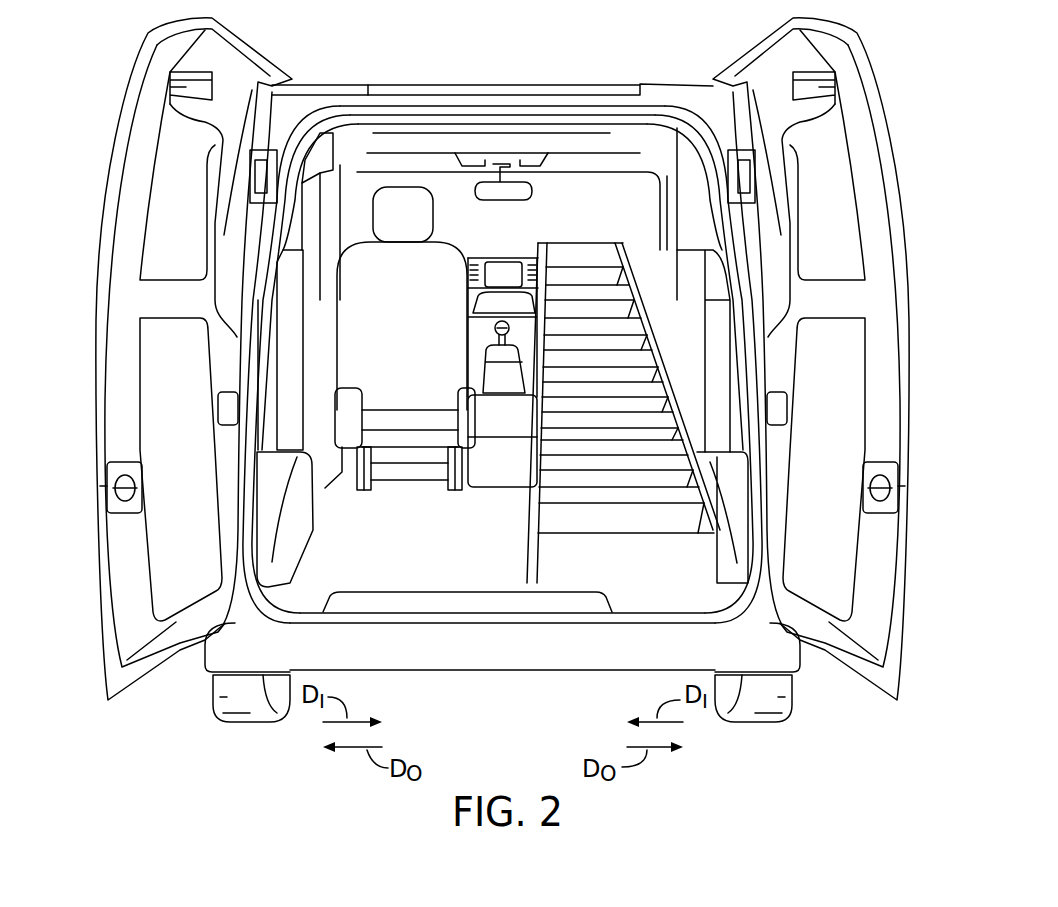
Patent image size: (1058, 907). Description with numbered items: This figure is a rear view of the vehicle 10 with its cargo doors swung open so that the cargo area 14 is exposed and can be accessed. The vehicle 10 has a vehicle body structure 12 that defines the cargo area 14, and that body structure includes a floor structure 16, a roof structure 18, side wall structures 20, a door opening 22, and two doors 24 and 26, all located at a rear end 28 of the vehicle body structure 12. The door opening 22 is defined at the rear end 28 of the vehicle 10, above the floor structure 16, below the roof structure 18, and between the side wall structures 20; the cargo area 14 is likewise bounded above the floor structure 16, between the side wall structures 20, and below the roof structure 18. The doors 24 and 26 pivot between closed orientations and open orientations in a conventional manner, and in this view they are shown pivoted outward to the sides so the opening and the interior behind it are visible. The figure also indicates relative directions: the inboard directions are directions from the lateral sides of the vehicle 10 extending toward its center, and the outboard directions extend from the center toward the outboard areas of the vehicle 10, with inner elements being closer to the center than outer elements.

The vehicle 10 is at (445, 46).
The vehicle body structure 12 is at (665, 76).
The cargo area 14 is at (570, 196).
The floor structure 16 is at (442, 552).
The roof structure 18 is at (335, 97).
The side wall structures 20 is at (267, 355).
The door opening 22 is at (253, 498).
The door 24 is at (118, 408).
The door 26 is at (882, 373).
The rear end 28 is at (418, 648).